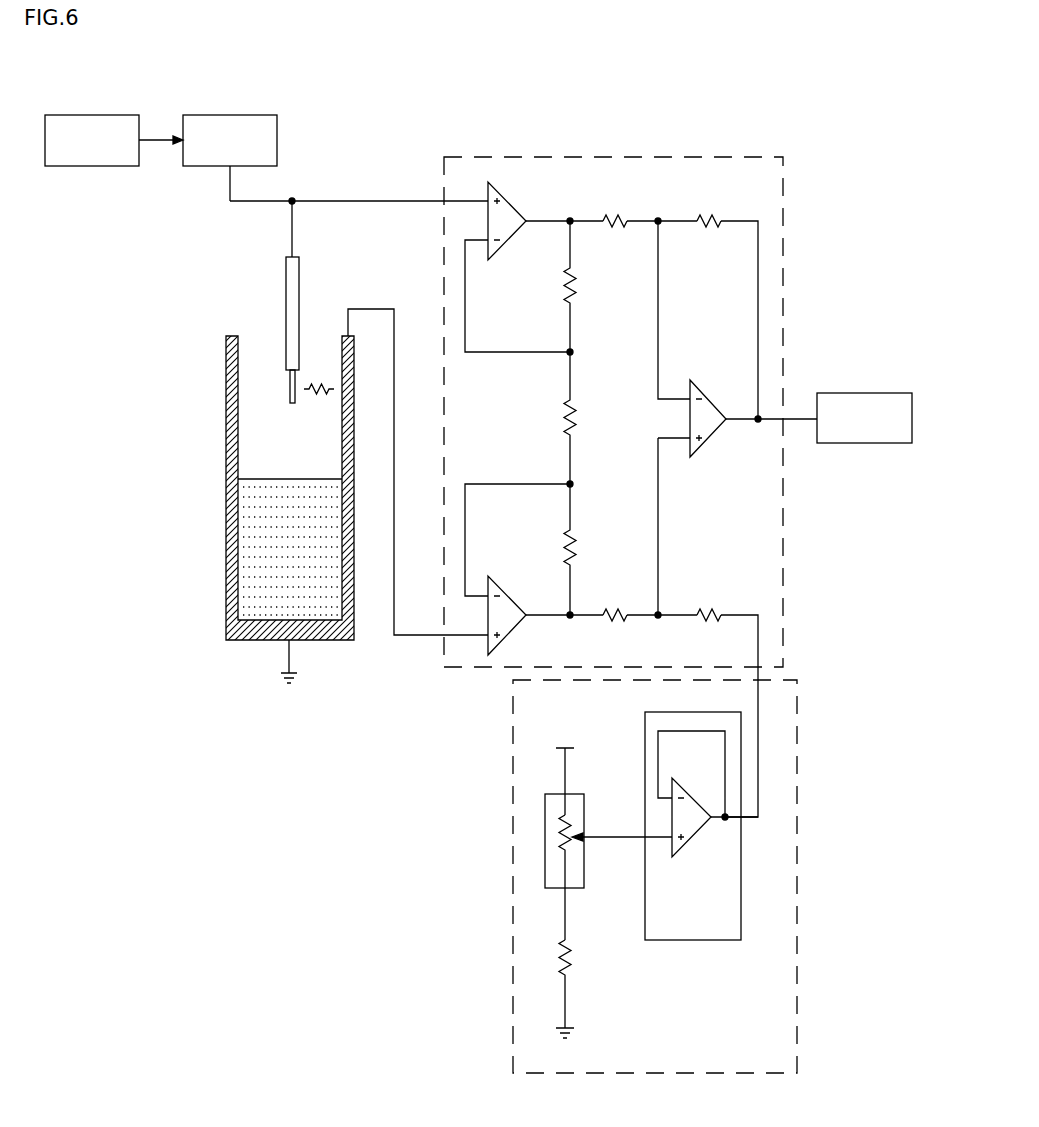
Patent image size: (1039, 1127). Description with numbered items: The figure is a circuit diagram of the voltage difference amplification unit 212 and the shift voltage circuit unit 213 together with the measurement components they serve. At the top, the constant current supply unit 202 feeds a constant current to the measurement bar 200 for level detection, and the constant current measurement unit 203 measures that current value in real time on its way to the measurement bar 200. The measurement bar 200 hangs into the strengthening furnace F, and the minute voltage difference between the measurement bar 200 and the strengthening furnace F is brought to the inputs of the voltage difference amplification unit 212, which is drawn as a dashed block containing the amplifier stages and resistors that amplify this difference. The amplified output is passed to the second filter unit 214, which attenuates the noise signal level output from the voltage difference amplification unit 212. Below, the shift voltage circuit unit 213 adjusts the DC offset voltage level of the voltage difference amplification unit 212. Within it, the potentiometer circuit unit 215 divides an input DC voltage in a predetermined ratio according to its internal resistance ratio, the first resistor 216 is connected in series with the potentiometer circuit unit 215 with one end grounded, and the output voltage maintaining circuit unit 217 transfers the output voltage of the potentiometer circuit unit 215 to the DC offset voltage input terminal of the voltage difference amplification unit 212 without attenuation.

The constant current supply unit 202 is at (134, 115).
The constant current measurement unit 203 is at (272, 115).
The measurement bar for level detection 200 is at (286, 316).
The strengthening furnace F is at (226, 452).
The voltage difference amplification unit 212 is at (783, 157).
The second filter unit 214 is at (905, 393).
The shift voltage circuit unit 213 is at (680, 876).
The potentiometer circuit unit 215 is at (585, 861).
The first resistor 216 is at (572, 958).
The output voltage maintaining circuit unit 217 is at (742, 875).